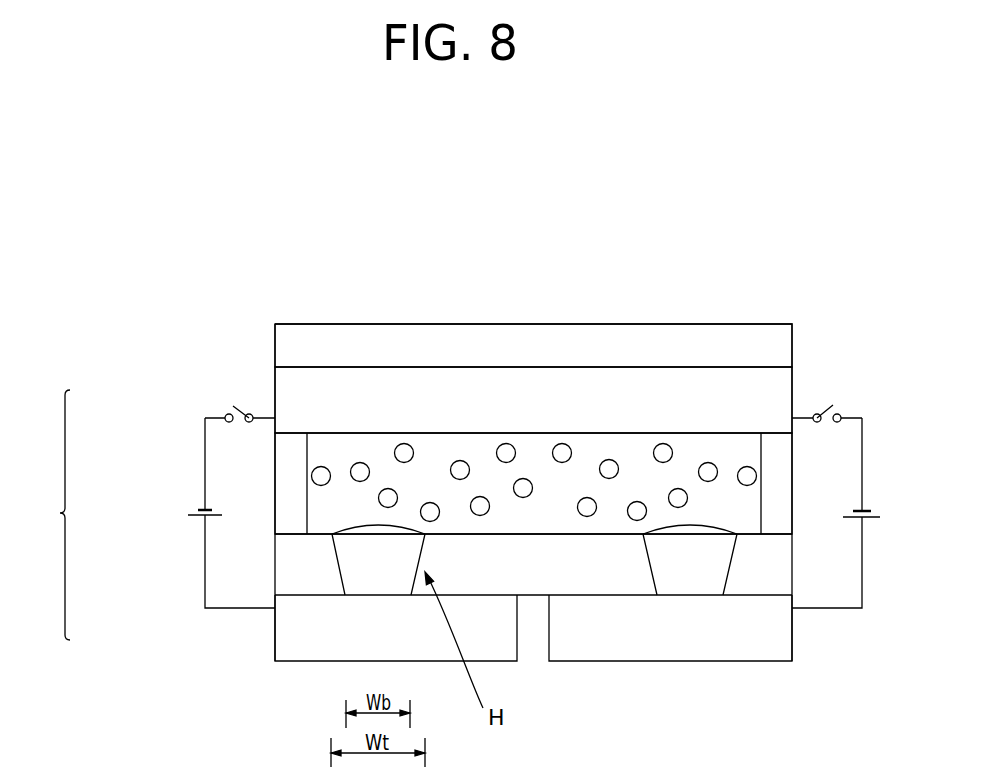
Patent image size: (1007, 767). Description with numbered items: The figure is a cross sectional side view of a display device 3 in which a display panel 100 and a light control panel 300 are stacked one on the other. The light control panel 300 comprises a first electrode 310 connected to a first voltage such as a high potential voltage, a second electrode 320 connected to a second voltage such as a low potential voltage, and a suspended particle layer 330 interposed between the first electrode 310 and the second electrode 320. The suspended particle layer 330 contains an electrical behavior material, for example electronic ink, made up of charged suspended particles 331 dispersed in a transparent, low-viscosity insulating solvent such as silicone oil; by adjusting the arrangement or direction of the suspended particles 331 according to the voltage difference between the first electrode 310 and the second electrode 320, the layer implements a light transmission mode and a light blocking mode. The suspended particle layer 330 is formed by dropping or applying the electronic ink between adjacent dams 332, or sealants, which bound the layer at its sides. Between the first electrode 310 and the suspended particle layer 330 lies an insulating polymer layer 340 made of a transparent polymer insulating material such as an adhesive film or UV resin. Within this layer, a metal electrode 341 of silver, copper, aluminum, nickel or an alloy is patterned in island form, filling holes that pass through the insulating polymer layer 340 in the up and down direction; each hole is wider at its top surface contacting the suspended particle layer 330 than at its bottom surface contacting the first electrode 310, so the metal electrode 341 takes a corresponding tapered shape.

The display device 3 is at (675, 290).
The display panel 100 is at (275, 341).
The light control panel 300 is at (43, 515).
The first electrode 310 is at (275, 636).
The second electrode 320 is at (275, 392).
The suspended particle layer 330 is at (139, 445).
The suspended particles 331 is at (307, 475).
The dams 332 is at (290, 448).
The insulating polymer layer 340 is at (275, 550).
The metal electrode 341 is at (360, 573).